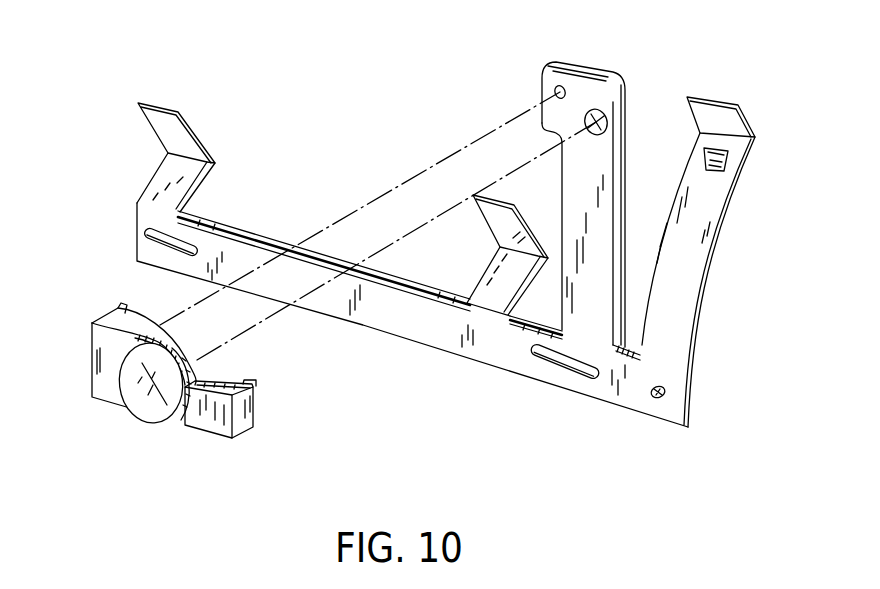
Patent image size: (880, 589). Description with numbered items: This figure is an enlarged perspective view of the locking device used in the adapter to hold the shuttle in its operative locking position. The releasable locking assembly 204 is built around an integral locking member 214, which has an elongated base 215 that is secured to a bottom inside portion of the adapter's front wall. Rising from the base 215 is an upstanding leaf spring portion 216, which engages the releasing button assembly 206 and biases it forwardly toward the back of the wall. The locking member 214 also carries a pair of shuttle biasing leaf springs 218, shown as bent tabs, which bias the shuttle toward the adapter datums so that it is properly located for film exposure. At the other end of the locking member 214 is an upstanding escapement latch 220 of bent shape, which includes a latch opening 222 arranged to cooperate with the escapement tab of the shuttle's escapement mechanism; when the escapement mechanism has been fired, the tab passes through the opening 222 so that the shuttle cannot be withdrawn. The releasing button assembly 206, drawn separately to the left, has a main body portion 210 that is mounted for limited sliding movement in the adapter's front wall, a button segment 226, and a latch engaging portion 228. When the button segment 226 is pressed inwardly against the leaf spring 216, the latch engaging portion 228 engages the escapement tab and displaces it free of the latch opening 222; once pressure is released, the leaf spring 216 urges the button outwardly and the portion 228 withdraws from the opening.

The releasable locking assembly 204 is at (402, 91).
The releasing button assembly 206 is at (52, 352).
The main body portion 210 is at (132, 322).
The locking member 214 is at (435, 353).
The elongated base 215 is at (367, 324).
The leaf spring portion 216 is at (614, 72).
The shuttle biasing leaf springs 218 is at (203, 140).
The escapement latch 220 is at (729, 209).
The latch opening 222 is at (720, 156).
The button segment 226 is at (140, 412).
The latch engaging portion 228 is at (253, 389).